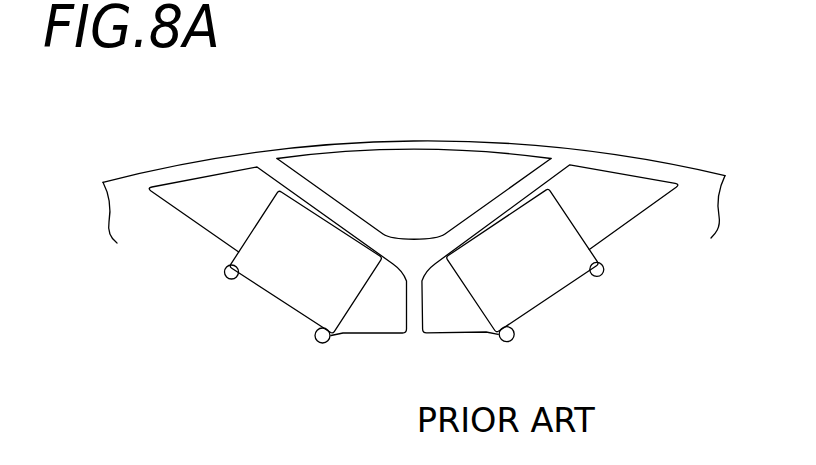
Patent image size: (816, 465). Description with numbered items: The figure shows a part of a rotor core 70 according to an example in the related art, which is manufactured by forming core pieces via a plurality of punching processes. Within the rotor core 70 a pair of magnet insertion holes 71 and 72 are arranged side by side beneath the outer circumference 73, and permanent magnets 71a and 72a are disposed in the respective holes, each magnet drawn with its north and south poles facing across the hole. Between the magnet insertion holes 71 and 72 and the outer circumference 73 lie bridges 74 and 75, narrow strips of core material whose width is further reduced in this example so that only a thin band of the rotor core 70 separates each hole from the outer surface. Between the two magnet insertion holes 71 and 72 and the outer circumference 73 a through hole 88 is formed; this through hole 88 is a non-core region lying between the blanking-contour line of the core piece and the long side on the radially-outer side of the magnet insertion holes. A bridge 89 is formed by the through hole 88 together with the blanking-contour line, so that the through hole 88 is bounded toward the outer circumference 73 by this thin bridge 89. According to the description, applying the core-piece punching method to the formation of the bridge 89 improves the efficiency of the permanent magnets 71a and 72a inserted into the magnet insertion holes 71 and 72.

The rotor core 70 is at (525, 137).
The magnet insertion hole 71 is at (237, 188).
The permanent magnet 71a is at (278, 265).
The magnet insertion hole 72 is at (598, 223).
The permanent magnet 72a is at (563, 265).
The outer circumference 73 is at (410, 133).
The bridge 74 is at (178, 170).
The bridge 75 is at (620, 163).
The through hole 88 is at (362, 188).
The bridge 89 is at (322, 148).